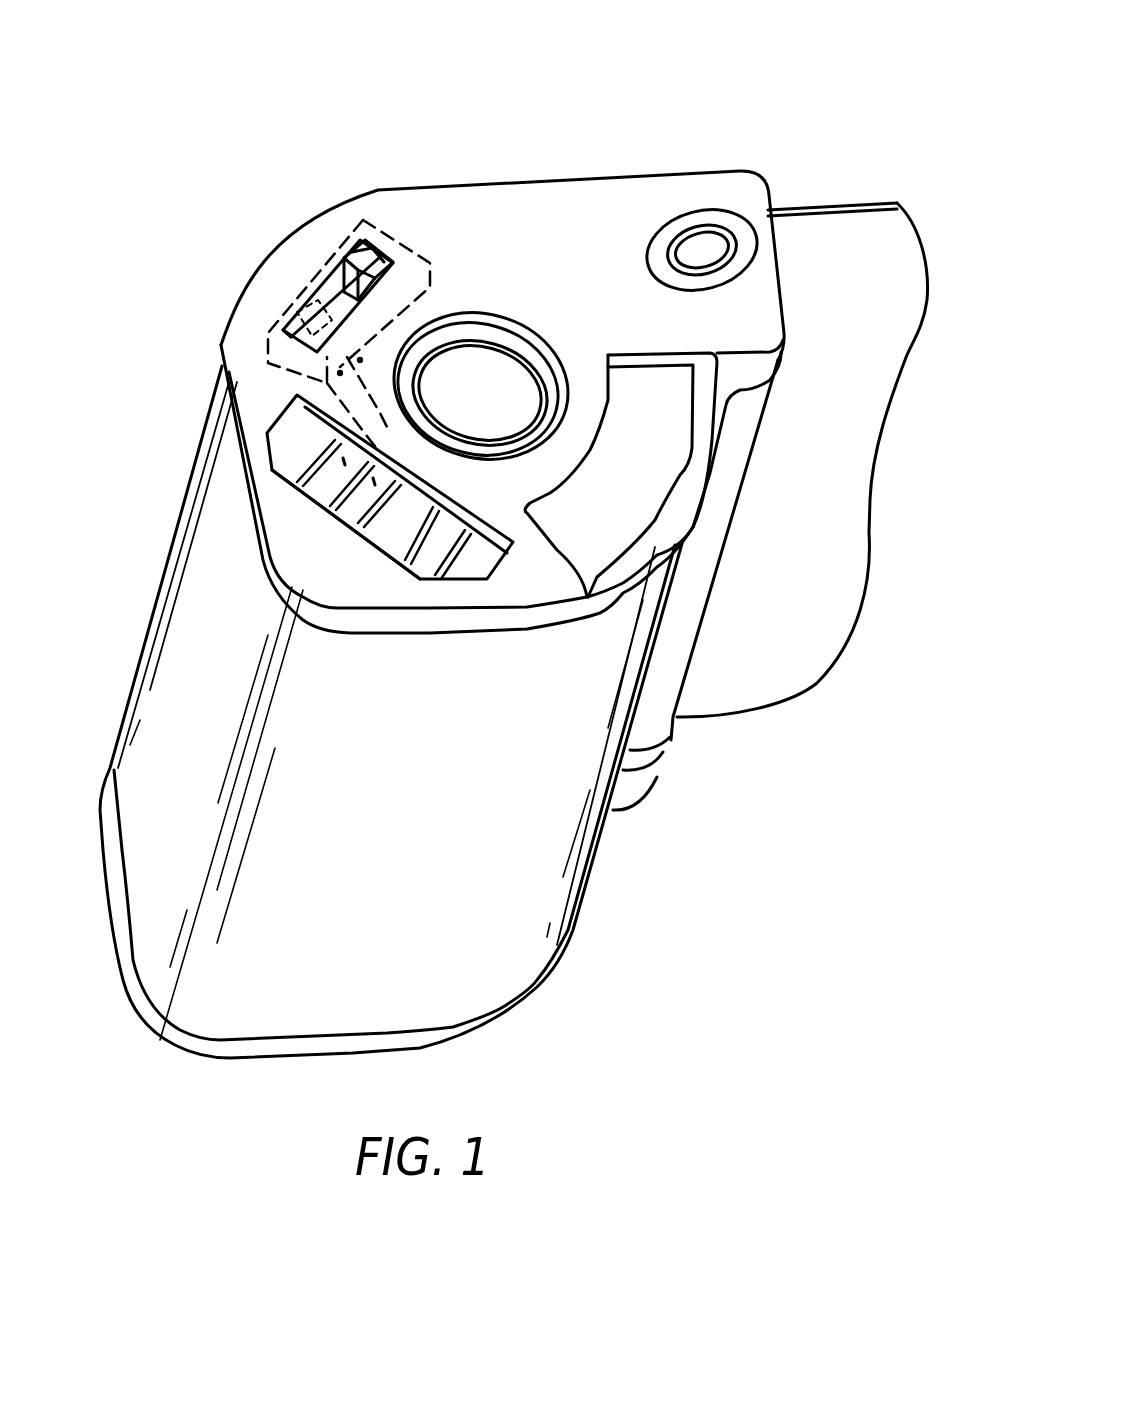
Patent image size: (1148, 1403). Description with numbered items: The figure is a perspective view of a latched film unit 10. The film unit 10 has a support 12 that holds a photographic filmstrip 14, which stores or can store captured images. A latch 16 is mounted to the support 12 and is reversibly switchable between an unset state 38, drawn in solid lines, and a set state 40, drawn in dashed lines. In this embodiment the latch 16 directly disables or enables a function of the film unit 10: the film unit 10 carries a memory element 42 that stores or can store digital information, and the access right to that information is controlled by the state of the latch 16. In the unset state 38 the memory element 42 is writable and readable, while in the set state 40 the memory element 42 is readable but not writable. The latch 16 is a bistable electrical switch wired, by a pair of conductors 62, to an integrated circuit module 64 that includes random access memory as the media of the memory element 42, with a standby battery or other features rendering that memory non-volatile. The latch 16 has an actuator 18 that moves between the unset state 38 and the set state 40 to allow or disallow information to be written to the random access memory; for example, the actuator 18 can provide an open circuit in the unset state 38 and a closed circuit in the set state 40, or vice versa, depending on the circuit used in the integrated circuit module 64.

The latched film unit 10 is at (222, 146).
The support 12 is at (665, 165).
The photographic filmstrip 14 is at (853, 205).
The latch 16 is at (320, 275).
The actuator 18 is at (388, 283).
The unset state 38 is at (350, 242).
The set state 40 is at (302, 318).
The memory element 42 is at (467, 563).
The pair of conductors 62 is at (333, 427).
The integrated circuit module 64 is at (350, 517).